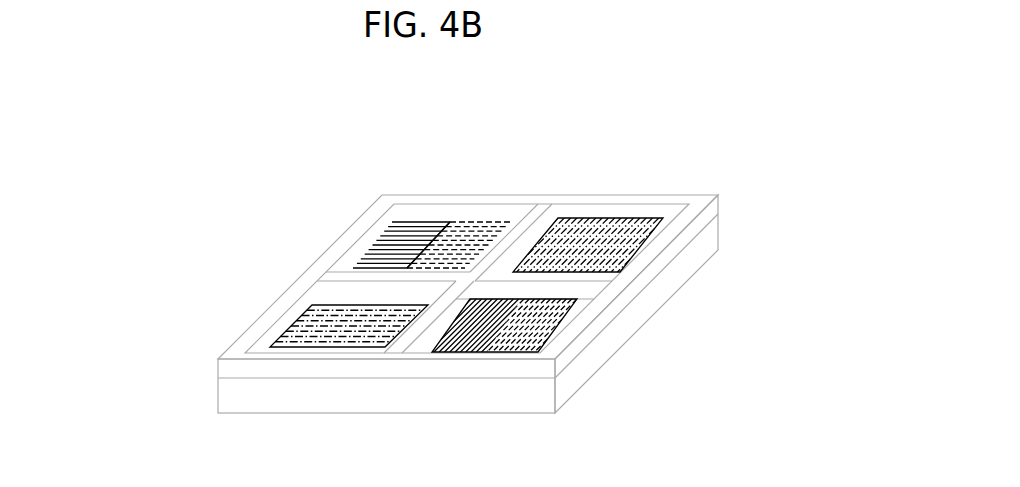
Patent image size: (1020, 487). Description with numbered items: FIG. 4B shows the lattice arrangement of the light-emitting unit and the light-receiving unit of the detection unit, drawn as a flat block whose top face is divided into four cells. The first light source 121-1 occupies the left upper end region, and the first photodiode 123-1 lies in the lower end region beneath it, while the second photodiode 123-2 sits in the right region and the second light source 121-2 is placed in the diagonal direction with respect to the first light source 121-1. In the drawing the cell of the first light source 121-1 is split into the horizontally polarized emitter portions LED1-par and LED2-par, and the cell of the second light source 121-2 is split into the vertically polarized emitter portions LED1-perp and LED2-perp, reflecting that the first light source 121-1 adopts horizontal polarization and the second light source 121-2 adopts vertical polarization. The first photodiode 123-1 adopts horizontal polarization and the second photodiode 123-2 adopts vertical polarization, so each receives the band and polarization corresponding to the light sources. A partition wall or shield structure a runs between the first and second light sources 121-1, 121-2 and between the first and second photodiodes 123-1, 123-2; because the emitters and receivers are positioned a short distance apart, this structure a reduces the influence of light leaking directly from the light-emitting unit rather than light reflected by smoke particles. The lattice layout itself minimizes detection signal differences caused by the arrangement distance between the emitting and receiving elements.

The first light source 121-1 is at (425, 220).
The second light source 121-2 is at (544, 342).
The first photodiode 123-1 is at (314, 333).
The second photodiode 123-2 is at (597, 240).
The first LED region LED1∥ LED1-par is at (386, 250).
The second LED region LED2∥ LED2-par is at (470, 228).
The first LED region LED1⊥ LED1-perp is at (465, 342).
The second LED region LED2⊥ LED2-perp is at (557, 318).
The partition wall or shield structure a is at (497, 226).